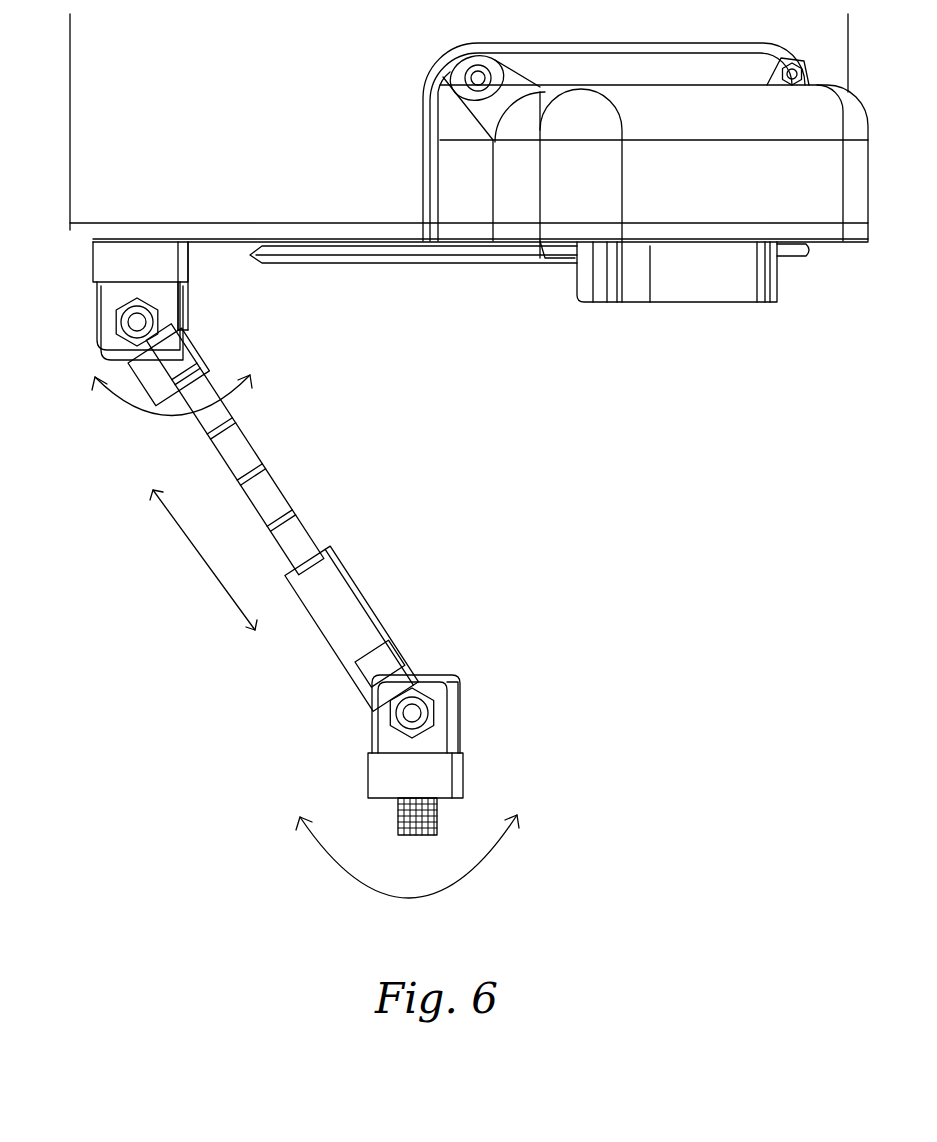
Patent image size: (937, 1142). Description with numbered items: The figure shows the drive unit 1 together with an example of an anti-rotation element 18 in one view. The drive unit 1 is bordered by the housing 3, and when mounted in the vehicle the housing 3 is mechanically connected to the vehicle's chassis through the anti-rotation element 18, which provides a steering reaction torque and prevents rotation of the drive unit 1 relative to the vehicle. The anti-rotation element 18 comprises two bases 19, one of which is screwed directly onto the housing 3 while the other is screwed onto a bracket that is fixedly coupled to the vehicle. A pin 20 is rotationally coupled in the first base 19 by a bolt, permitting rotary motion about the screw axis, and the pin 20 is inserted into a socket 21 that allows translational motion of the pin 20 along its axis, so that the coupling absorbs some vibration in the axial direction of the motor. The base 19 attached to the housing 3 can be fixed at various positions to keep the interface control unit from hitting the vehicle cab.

The drive unit 1 is at (442, 292).
The housing 3 is at (103, 230).
The anti-rotation element 18 is at (180, 643).
The base 19 is at (153, 263).
The pin 20 is at (260, 495).
The socket 21 is at (332, 613).